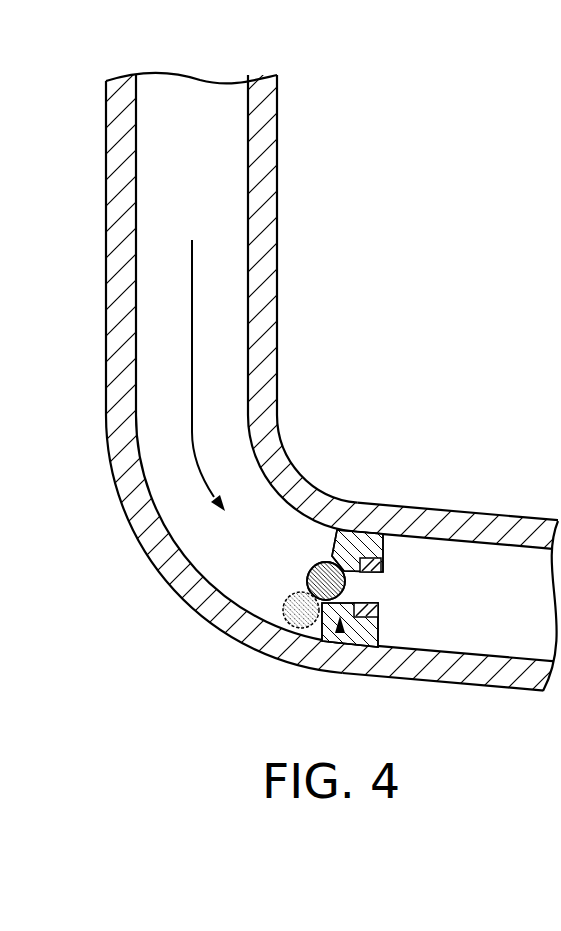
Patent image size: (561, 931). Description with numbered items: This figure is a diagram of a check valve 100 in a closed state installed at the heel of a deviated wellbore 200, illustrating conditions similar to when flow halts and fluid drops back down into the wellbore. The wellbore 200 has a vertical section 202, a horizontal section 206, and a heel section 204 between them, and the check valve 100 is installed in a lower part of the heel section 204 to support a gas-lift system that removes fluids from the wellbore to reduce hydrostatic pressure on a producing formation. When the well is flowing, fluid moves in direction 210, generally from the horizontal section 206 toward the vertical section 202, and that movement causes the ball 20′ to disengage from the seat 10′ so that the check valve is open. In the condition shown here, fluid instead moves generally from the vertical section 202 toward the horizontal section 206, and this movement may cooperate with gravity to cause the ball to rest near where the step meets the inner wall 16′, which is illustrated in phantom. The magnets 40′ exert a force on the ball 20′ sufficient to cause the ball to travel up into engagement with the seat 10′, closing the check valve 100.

The deviated wellbore 200 is at (328, 384).
The vertical section 202 is at (293, 222).
The heel section 204 is at (269, 509).
The horizontal section 206 is at (538, 507).
The direction 210 is at (125, 517).
The seat 10′ is at (348, 546).
The magnets 40′ is at (370, 557).
The ball 20′ is at (308, 571).
The inner wall 16′ is at (270, 619).
The check valve 100 is at (341, 633).